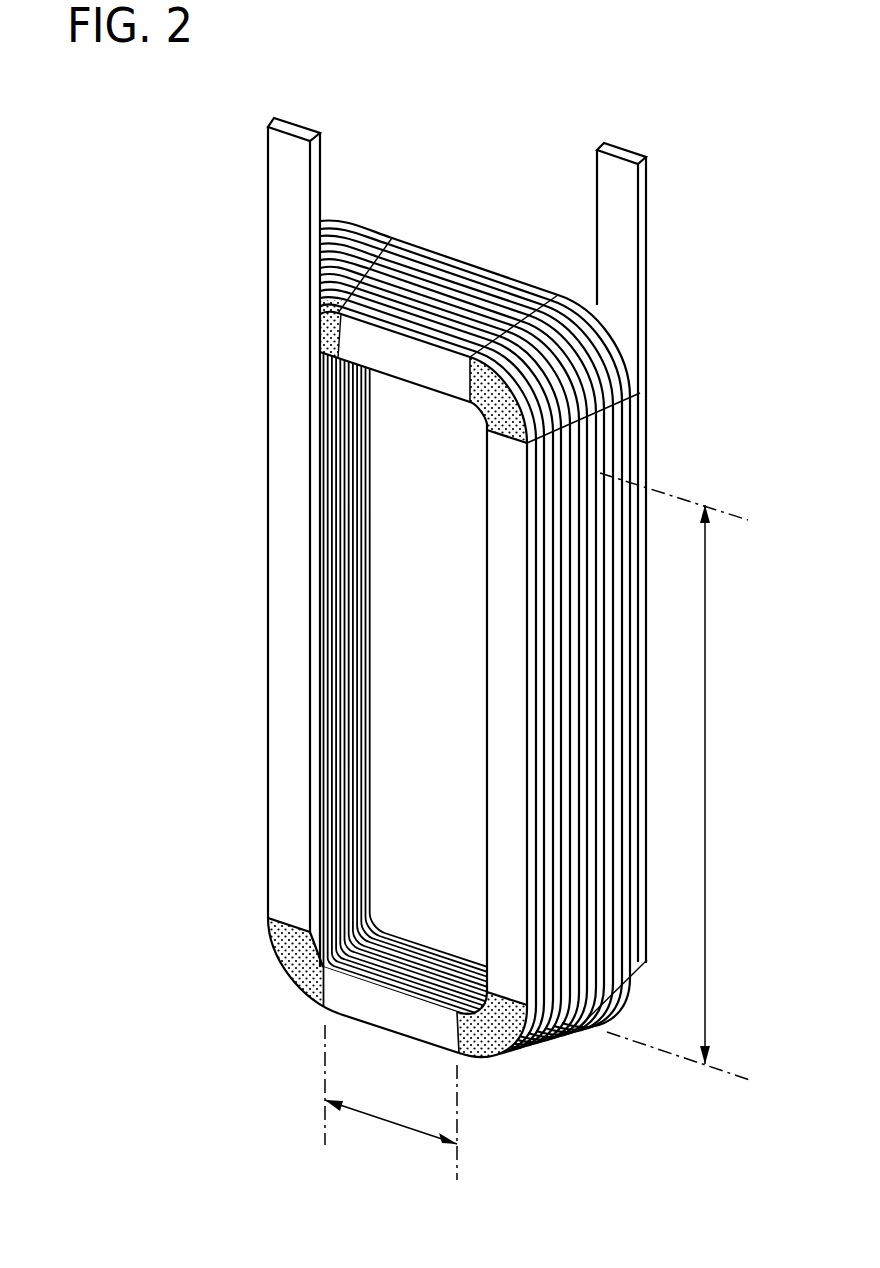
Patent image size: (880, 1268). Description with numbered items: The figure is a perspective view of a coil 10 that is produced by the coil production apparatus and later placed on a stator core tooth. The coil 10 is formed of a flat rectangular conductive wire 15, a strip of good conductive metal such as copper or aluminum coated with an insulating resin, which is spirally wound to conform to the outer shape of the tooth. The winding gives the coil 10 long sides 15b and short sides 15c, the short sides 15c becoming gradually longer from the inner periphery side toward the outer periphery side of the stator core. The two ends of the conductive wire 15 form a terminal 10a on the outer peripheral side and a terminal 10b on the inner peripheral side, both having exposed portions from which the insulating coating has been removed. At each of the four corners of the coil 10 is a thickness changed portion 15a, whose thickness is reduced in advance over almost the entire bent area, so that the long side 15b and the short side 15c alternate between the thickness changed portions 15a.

The coil 10 is at (410, 128).
The terminal on outer peripheral side 10a is at (618, 165).
The terminal on inner peripheral side 10b is at (280, 167).
The flat rectangular conductive wire 15 is at (274, 702).
The thickness changed portion 15a is at (324, 340).
The long side 15b is at (677, 776).
The short side 15c is at (391, 1102).